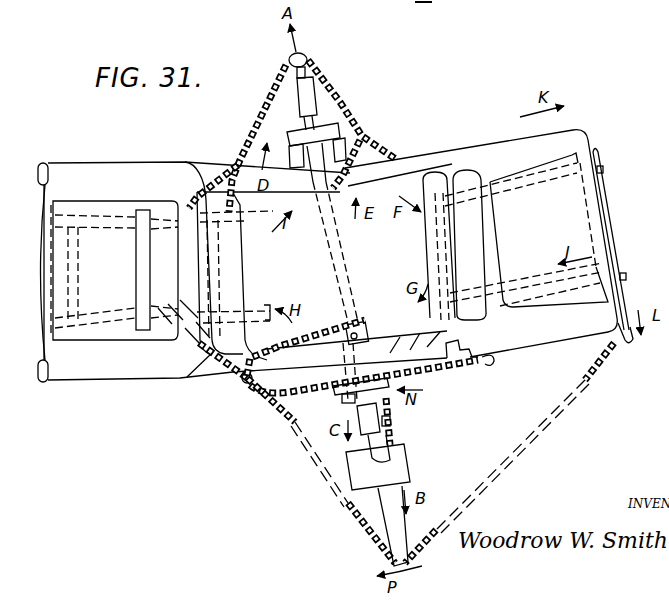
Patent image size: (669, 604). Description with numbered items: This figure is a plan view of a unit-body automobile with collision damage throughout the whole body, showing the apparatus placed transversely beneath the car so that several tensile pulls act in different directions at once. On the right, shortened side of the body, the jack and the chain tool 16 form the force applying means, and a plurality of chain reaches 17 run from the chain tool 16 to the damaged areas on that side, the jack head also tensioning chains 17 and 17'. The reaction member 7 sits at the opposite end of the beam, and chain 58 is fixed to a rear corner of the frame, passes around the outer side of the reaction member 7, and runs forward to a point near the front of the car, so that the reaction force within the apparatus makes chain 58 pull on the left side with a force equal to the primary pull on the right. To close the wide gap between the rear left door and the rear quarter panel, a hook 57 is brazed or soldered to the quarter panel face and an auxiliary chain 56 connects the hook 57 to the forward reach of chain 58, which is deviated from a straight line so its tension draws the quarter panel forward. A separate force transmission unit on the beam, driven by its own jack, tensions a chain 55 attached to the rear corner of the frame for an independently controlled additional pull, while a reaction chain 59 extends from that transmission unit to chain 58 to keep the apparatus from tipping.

The reaction member 7 is at (402, 544).
The chain tool 16 is at (289, 58).
The chain reach 17 is at (237, 138).
The chain 17' is at (352, 117).
The chain 55 is at (522, 283).
The auxiliary chain 56 is at (432, 372).
The hook 57 is at (490, 363).
The chain 58 is at (320, 462).
The reaction chain 59 is at (245, 382).